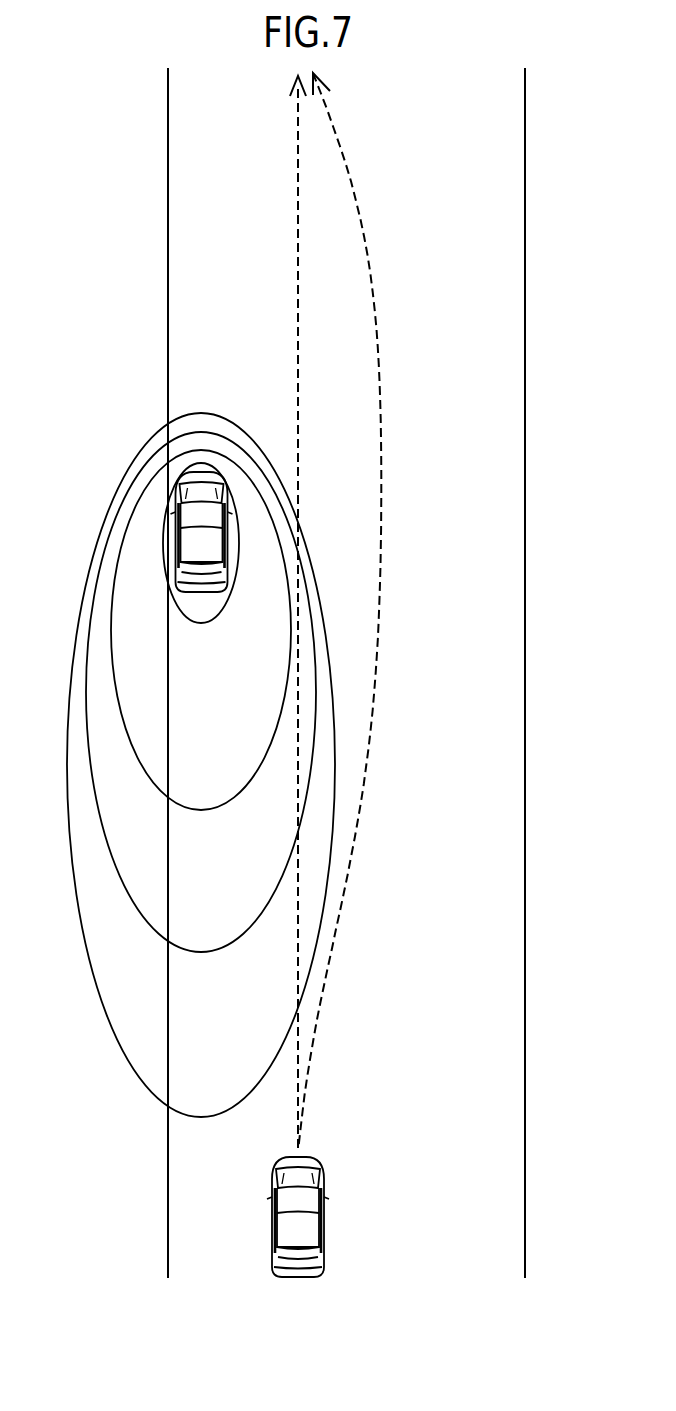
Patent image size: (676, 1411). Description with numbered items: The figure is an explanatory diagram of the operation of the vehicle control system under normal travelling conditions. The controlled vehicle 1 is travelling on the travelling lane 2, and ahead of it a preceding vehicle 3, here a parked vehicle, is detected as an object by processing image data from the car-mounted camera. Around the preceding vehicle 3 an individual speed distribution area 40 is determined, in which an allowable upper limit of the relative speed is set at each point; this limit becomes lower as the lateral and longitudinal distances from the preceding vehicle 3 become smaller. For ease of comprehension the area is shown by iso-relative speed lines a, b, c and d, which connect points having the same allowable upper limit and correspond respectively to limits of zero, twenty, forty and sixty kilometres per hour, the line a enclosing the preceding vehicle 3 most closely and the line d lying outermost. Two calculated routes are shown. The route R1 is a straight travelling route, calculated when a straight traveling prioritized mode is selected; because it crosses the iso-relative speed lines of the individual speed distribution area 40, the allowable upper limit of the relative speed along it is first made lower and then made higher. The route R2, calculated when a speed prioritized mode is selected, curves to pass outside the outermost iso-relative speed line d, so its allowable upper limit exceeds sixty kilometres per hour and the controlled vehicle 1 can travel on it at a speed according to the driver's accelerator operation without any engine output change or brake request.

The controlled vehicle 1 is at (322, 1227).
The travelling lane 2 is at (505, 152).
The preceding vehicle 3 is at (186, 537).
The individual speed distribution area 40 is at (191, 765).
The iso-relative speed line a is at (164, 579).
The iso-relative speed line b is at (118, 720).
The iso-relative speed line c is at (100, 829).
The iso-relative speed line d is at (75, 907).
The route R1 is at (298, 437).
The route R2 is at (380, 383).